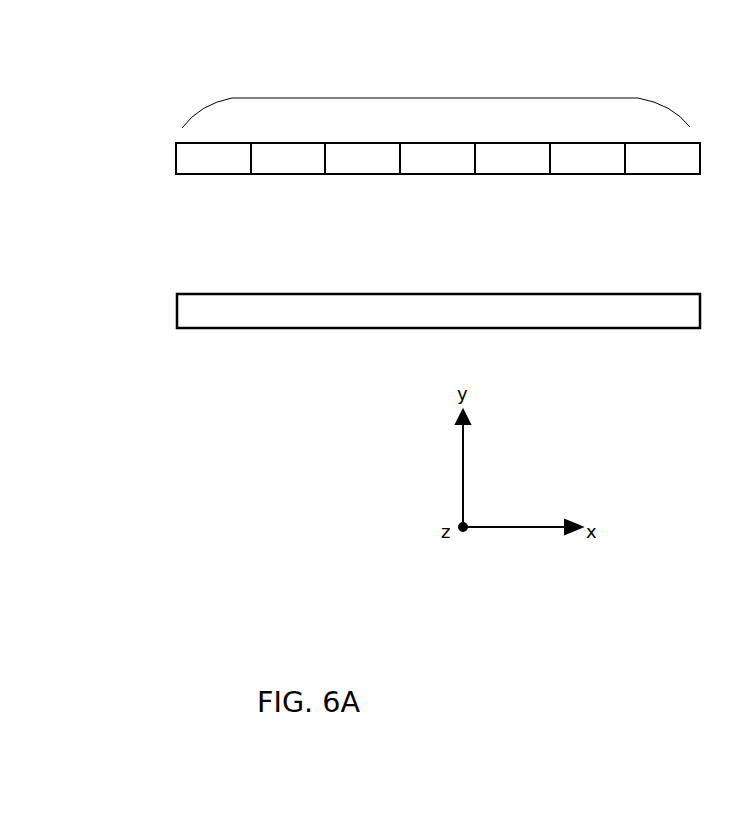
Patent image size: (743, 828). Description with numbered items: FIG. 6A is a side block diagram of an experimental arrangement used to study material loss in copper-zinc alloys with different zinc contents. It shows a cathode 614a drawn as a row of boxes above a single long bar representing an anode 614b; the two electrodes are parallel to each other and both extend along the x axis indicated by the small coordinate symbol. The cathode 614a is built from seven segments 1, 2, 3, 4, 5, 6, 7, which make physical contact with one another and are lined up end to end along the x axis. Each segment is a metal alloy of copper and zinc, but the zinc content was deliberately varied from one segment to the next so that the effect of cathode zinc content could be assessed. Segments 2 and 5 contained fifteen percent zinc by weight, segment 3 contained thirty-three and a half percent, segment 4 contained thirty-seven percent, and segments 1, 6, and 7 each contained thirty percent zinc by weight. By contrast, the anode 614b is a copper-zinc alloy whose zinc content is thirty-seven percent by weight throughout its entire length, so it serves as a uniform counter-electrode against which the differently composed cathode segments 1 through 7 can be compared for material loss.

The cathode 614a is at (438, 107).
The anode 614b is at (648, 329).
The segment 1 is at (213, 158).
The segment 2 is at (288, 158).
The segment 3 is at (362, 158).
The segment 4 is at (437, 158).
The segment 5 is at (512, 158).
The segment 6 is at (587, 158).
The segment 7 is at (662, 158).